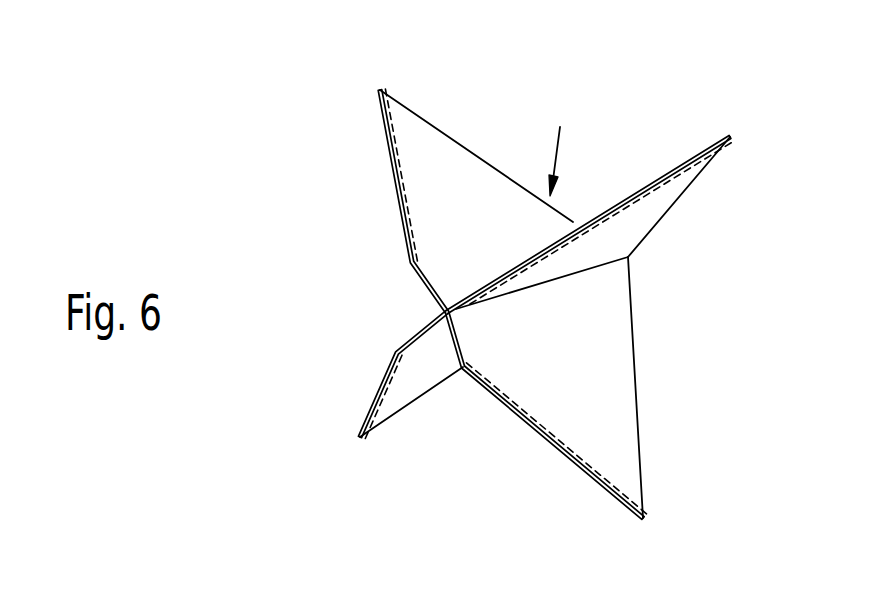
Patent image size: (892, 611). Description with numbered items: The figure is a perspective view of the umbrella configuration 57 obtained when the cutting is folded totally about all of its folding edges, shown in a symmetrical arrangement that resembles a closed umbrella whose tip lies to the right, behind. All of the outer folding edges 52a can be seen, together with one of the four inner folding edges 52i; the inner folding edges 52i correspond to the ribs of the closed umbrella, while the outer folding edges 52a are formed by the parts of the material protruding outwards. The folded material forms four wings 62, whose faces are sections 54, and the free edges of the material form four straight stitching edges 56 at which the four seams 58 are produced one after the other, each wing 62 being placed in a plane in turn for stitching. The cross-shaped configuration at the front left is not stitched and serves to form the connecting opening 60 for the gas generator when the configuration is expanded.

The outer folding edge 52a is at (477, 152).
The inner folding edge 52i is at (580, 273).
The section 54 is at (457, 228).
The stitching edge 56 is at (387, 148).
The umbrella configuration 57 is at (562, 143).
The seam 58 is at (400, 187).
The connecting opening 60 is at (420, 285).
The wing 62 is at (422, 132).